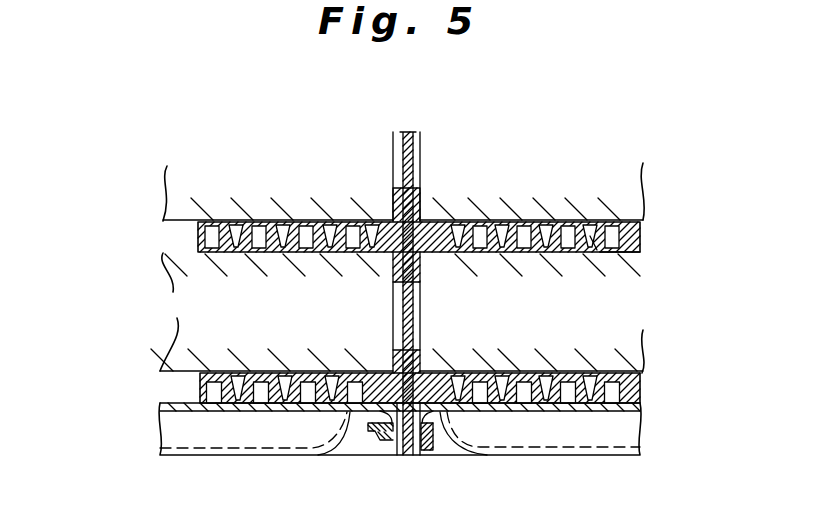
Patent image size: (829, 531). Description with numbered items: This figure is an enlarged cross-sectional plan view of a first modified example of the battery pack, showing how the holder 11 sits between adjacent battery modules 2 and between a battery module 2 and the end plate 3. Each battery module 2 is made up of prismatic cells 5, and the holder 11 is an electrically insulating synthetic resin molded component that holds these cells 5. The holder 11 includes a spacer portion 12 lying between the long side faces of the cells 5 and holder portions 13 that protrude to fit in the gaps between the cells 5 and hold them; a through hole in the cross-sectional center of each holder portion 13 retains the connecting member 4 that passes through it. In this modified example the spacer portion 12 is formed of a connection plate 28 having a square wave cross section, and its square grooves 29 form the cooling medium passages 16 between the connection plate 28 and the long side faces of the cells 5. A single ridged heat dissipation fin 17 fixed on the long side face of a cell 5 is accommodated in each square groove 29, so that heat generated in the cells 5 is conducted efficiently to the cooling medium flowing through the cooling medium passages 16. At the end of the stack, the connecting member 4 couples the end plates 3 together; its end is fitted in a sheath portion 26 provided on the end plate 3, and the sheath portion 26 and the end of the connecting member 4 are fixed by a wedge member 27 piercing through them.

The battery module 2 is at (160, 170).
The end plate 3 is at (297, 456).
The connecting member 4 is at (393, 140).
The cell 5 is at (284, 183).
The holder 11 is at (358, 199).
The spacer portion 12 is at (640, 236).
The holder portion 13 is at (416, 189).
The cooling medium passage 16 is at (550, 220).
The heat dissipation fin 17 is at (606, 280).
The sheath portion 26 is at (396, 446).
The wedge member 27 is at (434, 442).
The connection plate 28 is at (614, 258).
The square groove 29 is at (598, 252).